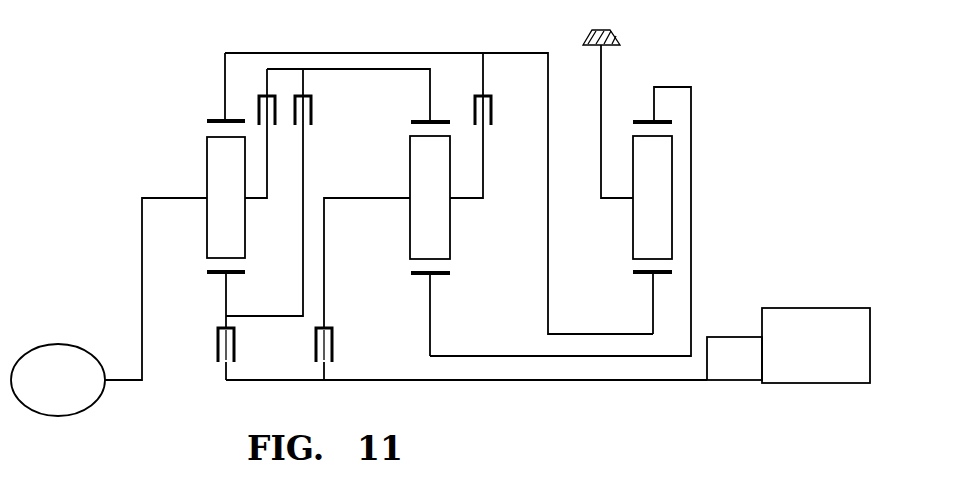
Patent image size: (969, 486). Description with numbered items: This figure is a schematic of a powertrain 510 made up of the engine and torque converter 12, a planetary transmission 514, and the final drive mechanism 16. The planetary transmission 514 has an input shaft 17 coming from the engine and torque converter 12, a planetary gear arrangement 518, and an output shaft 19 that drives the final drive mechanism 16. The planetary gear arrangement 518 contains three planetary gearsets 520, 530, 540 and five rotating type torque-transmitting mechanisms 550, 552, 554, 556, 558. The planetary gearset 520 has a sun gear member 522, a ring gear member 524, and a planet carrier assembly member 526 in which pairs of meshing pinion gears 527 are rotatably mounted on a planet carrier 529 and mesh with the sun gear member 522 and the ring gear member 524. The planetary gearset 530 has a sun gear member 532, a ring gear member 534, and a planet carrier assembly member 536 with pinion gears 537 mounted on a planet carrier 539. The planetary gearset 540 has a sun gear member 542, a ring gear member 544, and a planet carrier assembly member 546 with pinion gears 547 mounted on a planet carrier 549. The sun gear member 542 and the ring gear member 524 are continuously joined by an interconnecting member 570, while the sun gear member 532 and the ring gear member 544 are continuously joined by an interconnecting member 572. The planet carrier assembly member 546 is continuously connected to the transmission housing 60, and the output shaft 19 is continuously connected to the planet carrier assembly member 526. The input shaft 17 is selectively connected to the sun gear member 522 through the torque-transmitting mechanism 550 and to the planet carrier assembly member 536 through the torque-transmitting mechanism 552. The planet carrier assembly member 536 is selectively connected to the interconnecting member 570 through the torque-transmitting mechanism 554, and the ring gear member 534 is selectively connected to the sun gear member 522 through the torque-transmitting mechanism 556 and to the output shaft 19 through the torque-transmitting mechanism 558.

The powertrain 510 is at (793, 146).
The planetary transmission 514 is at (414, 50).
The interconnecting member 570 is at (364, 53).
The final drive mechanism 16 is at (86, 345).
The output shaft 19 is at (118, 382).
The planet carrier assembly member 526 is at (205, 138).
The pinion gears 527 is at (213, 182).
The ring gear member 524 is at (222, 120).
The sun gear member 522 is at (237, 275).
The planetary gearset 520 is at (204, 282).
The planet carrier 529 is at (256, 199).
The torque-transmitting mechanism 550 is at (236, 353).
The torque-transmitting mechanism 558 is at (258, 95).
The torque-transmitting mechanism 556 is at (311, 95).
The torque-transmitting mechanism 554 is at (490, 95).
The planet carrier assembly member 536 is at (408, 135).
The pinion gears 537 is at (418, 150).
The ring gear member 534 is at (420, 121).
The sun gear member 532 is at (440, 276).
The planetary gearset 530 is at (406, 262).
The planet carrier 539 is at (397, 199).
The torque-transmitting mechanism 552 is at (334, 353).
The interconnecting member 572 is at (692, 222).
The planet carrier assembly member 546 is at (629, 135).
The pinion gears 547 is at (640, 152).
The ring gear member 544 is at (645, 121).
The sun gear member 542 is at (674, 275).
The planetary gearset 540 is at (627, 262).
The planet carrier 549 is at (617, 199).
The transmission housing 60 is at (619, 36).
The planetary gear arrangement 518 is at (451, 362).
The input shaft 17 is at (690, 382).
The engine and torque converter 12 is at (819, 306).